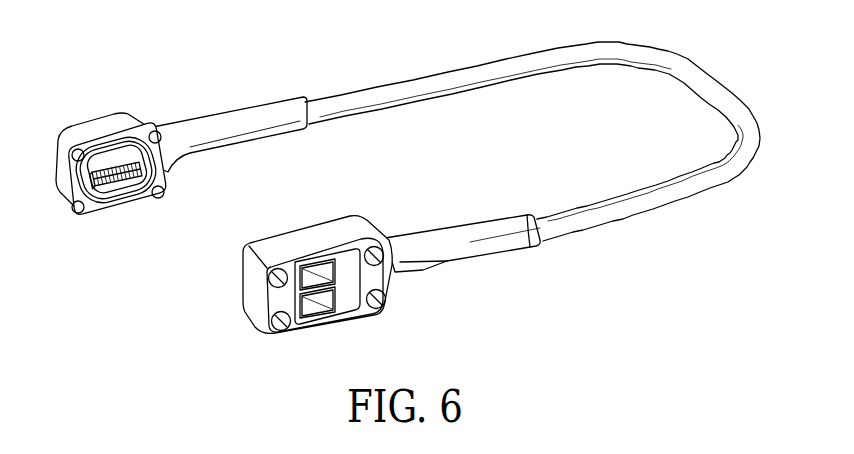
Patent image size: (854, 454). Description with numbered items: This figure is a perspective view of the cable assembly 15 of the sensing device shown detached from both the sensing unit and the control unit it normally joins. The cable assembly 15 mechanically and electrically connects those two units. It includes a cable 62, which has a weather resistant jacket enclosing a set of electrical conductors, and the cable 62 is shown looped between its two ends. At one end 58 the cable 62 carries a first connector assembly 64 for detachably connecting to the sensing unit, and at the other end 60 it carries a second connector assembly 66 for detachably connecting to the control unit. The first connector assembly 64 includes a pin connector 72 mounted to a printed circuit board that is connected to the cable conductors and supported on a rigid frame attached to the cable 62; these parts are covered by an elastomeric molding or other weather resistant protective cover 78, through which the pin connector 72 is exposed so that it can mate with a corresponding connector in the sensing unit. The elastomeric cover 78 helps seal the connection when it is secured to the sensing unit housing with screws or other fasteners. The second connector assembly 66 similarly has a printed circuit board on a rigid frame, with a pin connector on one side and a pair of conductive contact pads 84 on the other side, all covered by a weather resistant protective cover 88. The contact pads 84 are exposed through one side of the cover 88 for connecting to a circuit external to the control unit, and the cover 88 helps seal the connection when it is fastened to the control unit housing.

The cable assembly 15 is at (397, 189).
The cable end 58 is at (169, 104).
The cable end 60 is at (356, 275).
The cable 62 is at (422, 80).
The first connector assembly 64 is at (170, 133).
The second connector assembly 66 is at (234, 325).
The pin connector 72 is at (124, 181).
The protective cover 78 is at (62, 170).
The contact pads 84 is at (322, 281).
The protective cover 88 is at (253, 290).